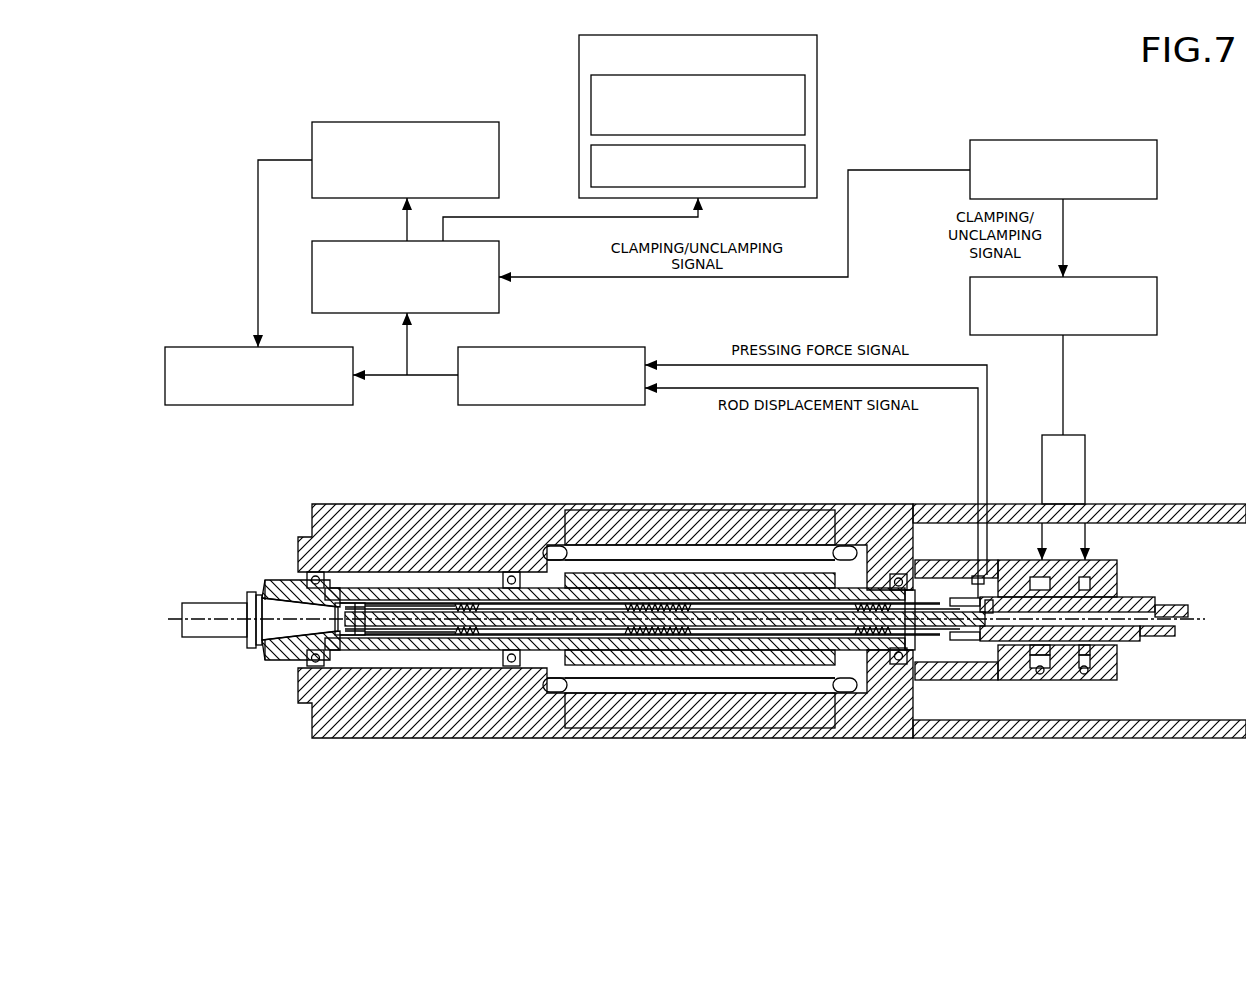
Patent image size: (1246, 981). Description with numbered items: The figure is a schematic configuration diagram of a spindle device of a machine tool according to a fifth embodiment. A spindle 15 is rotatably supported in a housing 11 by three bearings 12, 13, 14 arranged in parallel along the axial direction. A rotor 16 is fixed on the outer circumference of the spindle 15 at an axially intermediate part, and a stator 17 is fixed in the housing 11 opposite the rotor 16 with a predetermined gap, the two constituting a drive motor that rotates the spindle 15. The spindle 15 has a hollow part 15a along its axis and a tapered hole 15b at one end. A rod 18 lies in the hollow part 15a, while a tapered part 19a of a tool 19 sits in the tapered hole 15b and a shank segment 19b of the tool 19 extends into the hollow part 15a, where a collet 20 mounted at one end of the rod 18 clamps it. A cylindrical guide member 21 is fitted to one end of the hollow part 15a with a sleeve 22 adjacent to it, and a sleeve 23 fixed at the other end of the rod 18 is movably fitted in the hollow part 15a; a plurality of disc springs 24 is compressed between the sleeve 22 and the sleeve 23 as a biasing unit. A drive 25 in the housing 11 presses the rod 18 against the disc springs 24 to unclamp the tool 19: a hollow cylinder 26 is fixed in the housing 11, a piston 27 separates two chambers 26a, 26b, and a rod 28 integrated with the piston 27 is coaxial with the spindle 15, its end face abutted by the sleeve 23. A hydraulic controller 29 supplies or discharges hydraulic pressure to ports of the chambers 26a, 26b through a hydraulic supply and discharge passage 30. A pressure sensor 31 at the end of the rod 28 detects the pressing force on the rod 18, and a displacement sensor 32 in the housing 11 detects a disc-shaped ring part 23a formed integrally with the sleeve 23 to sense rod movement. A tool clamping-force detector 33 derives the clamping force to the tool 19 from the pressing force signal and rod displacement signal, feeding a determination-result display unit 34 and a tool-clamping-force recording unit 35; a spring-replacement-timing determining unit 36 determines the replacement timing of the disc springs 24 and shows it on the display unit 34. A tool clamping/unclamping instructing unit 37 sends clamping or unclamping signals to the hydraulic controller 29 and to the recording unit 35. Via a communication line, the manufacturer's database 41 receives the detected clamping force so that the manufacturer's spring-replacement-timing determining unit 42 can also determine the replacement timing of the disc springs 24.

The housing 11 is at (1224, 504).
The bearing 12 is at (305, 690).
The bearing 13 is at (508, 668).
The bearing 14 is at (897, 666).
The spindle 15 is at (460, 590).
The hollow part 15a is at (528, 604).
The tapered hole 15b is at (338, 578).
The rotor 16 is at (775, 660).
The stator 17 is at (722, 665).
The rod 18 is at (700, 528).
The tool 19 is at (205, 600).
The tapered part 19a is at (290, 645).
The shank segment 19b is at (330, 635).
The collet 20 is at (380, 606).
The guide member 21 is at (385, 648).
The sleeve 22 is at (437, 648).
The sleeve 23 is at (870, 650).
The ring part 23a is at (940, 577).
The disc springs 24 is at (645, 640).
The drive 25 is at (1125, 670).
The cylinder 26 is at (1117, 570).
The chamber 26a is at (1030, 665).
The chamber 26b is at (1085, 665).
The piston 27 is at (1050, 672).
The rod 28 is at (990, 650).
The hydraulic controller 29 is at (1125, 277).
The hydraulic supply and discharge passage 30 is at (1066, 415).
The pressure sensor 31 is at (960, 665).
The displacement sensor 32 is at (978, 574).
The tool clamping-force detector 33 is at (614, 347).
The determination-result display unit 34 is at (320, 347).
The tool-clamping-force recording unit 35 is at (499, 298).
The spring-replacement-timing determining unit 36 is at (466, 122).
The tool clamping/unclamping instructing unit 37 is at (1125, 140).
The database 41 is at (591, 166).
The spring-replacement-timing determining unit 42 is at (591, 105).